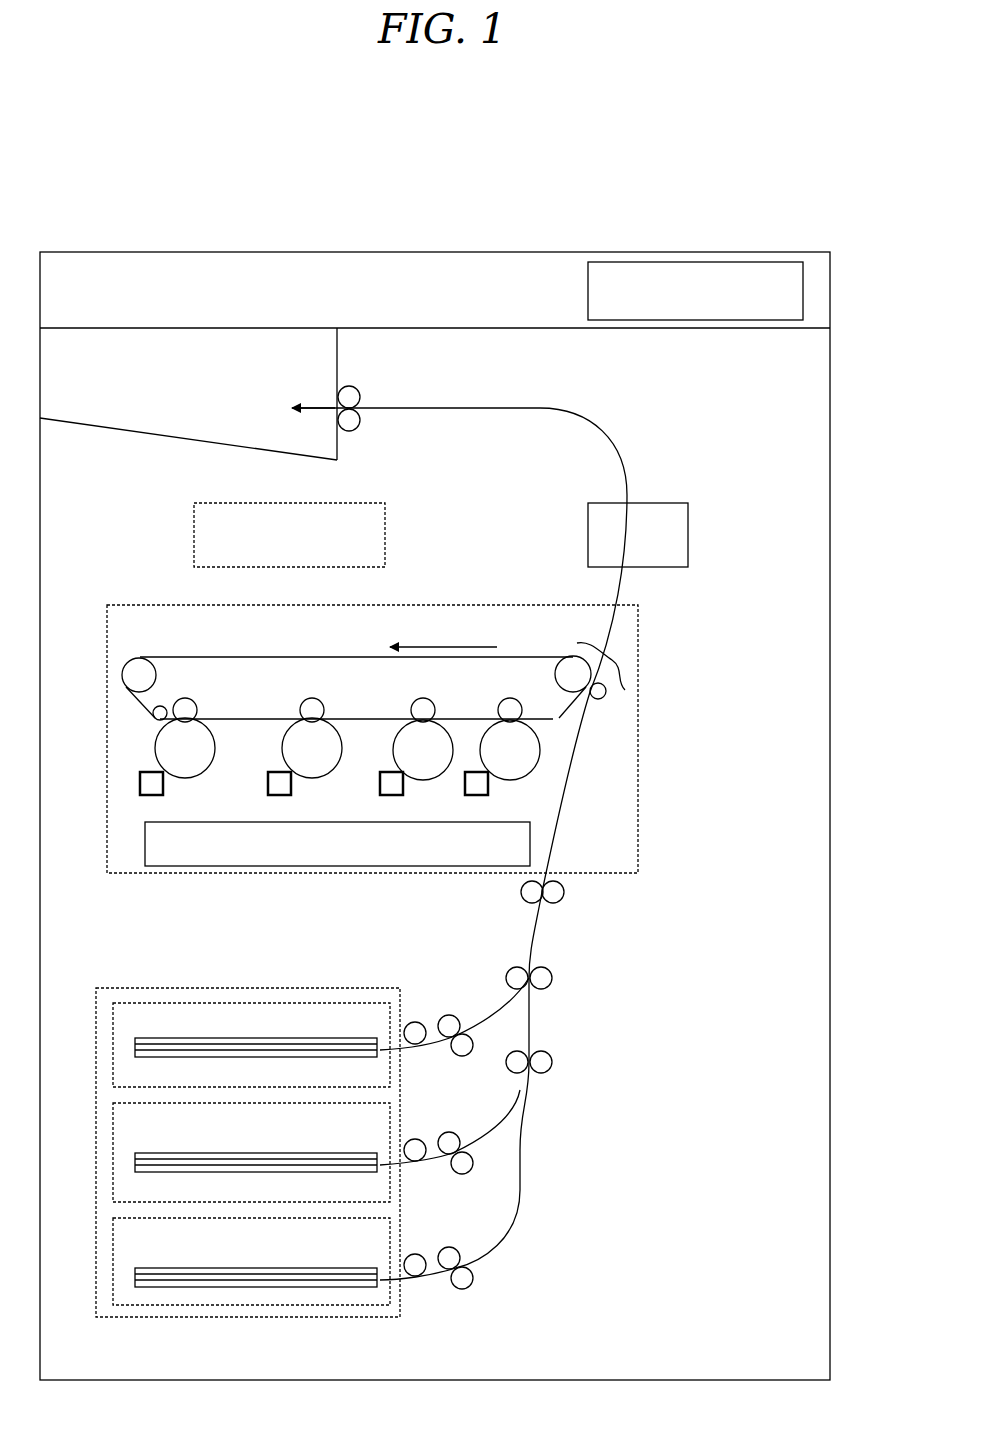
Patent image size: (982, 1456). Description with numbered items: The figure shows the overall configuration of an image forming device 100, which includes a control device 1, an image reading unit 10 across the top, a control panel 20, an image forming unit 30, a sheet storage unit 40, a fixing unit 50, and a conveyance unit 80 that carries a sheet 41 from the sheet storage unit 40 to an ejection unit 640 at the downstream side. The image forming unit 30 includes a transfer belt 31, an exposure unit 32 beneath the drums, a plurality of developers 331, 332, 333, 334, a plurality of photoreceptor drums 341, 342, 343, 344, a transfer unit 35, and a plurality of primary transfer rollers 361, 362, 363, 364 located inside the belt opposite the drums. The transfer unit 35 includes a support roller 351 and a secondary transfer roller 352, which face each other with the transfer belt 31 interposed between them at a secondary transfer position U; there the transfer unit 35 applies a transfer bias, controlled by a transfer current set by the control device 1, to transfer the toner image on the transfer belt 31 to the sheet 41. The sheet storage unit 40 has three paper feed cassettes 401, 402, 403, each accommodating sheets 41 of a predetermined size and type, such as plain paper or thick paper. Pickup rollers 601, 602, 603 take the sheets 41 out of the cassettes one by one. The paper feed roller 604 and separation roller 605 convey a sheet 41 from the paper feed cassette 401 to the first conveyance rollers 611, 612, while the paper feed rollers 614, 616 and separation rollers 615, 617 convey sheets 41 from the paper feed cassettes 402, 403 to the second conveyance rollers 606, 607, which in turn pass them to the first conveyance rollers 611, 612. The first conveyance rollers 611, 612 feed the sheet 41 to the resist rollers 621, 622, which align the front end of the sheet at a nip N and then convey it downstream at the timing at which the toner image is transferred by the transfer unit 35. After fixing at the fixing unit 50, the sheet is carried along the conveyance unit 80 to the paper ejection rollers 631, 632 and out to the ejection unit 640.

The image forming device 100 is at (778, 182).
The image reading unit 10 is at (326, 252).
The control panel 20 is at (700, 275).
The ejection unit 640 is at (168, 435).
The conveyance unit 80 is at (568, 410).
The paper ejection roller 632 is at (355, 388).
The paper ejection roller 631 is at (358, 430).
The fixing unit 50 is at (672, 503).
The control device 1 is at (392, 528).
The image forming unit 30 is at (440, 605).
The transfer belt 31 is at (285, 657).
The support roller 351 is at (568, 668).
The transfer unit 35 is at (612, 660).
The secondary transfer roller 352 is at (608, 693).
The secondary transfer position U is at (593, 708).
The primary transfer roller 361 is at (192, 700).
The primary transfer roller 362 is at (318, 700).
The primary transfer roller 363 is at (428, 700).
The primary transfer roller 364 is at (525, 688).
The photoreceptor drum 341 is at (156, 746).
The photoreceptor drum 342 is at (283, 745).
The photoreceptor drum 343 is at (410, 764).
The photoreceptor drum 344 is at (512, 775).
The developer 331 is at (139, 783).
The developer 332 is at (267, 783).
The developer 333 is at (379, 783).
The developer 334 is at (465, 785).
The exposure unit 32 is at (145, 842).
The resist roller 621 is at (521, 890).
The resist roller 622 is at (565, 892).
The nip N is at (546, 907).
The first conveyance roller 611 is at (507, 972).
The first conveyance roller 612 is at (553, 978).
The second conveyance roller 606 is at (509, 1055).
The second conveyance roller 607 is at (553, 1063).
The pickup roller 601 is at (418, 1022).
The paper feed roller 604 is at (455, 1018).
The separation roller 605 is at (460, 1057).
The pickup roller 602 is at (418, 1139).
The paper feed roller 614 is at (455, 1134).
The separation roller 615 is at (470, 1174).
The pickup roller 603 is at (418, 1254).
The paper feed roller 616 is at (455, 1249).
The separation roller 617 is at (470, 1289).
The sheet storage unit 40 is at (302, 985).
The paper feed cassette 401 is at (113, 1005).
The paper feed cassette 402 is at (113, 1152).
The paper feed cassette 403 is at (113, 1267).
The sheet 41 is at (232, 1038).